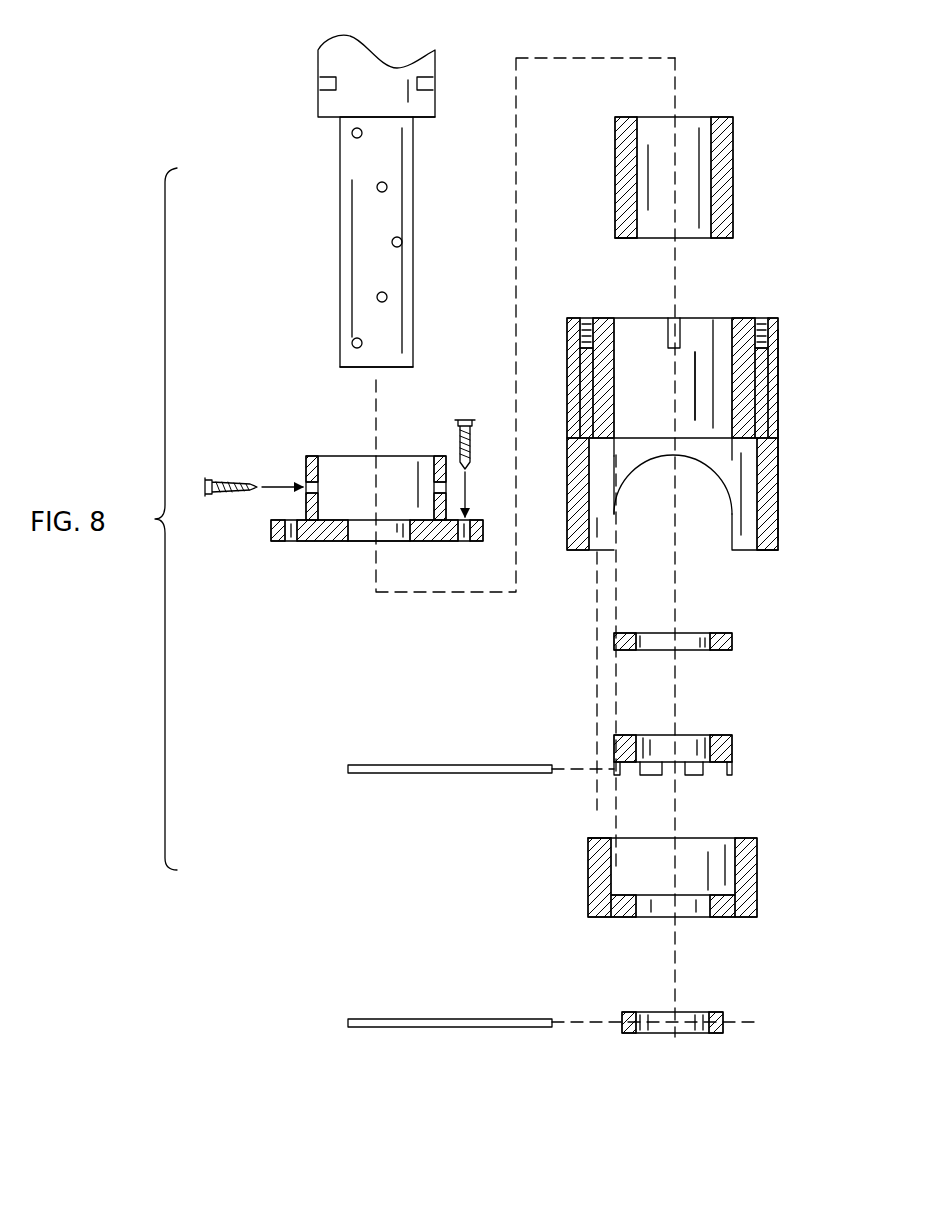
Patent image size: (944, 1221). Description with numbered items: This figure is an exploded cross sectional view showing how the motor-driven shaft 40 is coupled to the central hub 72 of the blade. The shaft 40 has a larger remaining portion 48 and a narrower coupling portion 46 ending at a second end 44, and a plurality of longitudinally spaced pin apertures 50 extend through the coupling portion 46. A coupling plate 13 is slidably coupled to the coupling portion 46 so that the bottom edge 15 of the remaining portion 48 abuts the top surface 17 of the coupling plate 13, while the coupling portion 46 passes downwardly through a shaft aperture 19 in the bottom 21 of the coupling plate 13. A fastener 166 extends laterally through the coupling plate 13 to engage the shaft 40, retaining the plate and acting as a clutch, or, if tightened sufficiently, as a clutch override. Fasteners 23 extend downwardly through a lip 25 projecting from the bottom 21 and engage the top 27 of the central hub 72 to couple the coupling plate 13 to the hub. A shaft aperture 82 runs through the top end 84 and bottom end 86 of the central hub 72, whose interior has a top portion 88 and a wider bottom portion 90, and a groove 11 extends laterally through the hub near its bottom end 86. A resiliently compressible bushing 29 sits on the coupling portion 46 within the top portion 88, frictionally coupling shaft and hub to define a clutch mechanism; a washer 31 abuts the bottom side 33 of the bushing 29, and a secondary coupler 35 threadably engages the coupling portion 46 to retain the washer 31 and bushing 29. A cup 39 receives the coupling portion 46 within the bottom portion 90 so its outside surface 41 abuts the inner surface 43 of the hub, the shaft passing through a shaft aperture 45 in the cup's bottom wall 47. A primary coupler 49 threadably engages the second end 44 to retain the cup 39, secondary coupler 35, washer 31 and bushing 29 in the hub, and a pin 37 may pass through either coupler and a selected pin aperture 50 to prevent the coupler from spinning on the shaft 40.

The shaft 40 is at (350, 202).
The remaining portion 48 is at (433, 83).
The bottom edge 15 is at (418, 118).
The pin apertures 50 is at (377, 187).
The coupling portion 46 is at (340, 222).
The second end 44 is at (352, 367).
The fastener 23 is at (465, 418).
The fastener 166 is at (205, 484).
The coupling plate 13 is at (338, 559).
The top surface 17 is at (350, 514).
The bottom 21 is at (369, 548).
The shaft aperture 19 is at (404, 530).
The lip 25 is at (483, 541).
The bushing 29 is at (662, 178).
The bottom side 33 is at (618, 238).
The top end 84 is at (597, 310).
The shaft aperture 82 is at (614, 345).
The top portion 88 is at (702, 349).
The top 27 is at (680, 426).
The central hub 72 is at (783, 398).
The groove 11 is at (612, 470).
The bottom portion 90 is at (718, 463).
The inner surface 43 is at (742, 548).
The bottom end 86 is at (768, 556).
The washer 31 is at (733, 640).
The secondary coupler 35 is at (733, 745).
The pin 37 is at (382, 765).
The cup 39 is at (588, 838).
The outside surface 41 is at (673, 901).
The shaft aperture 45 is at (638, 905).
The bottom wall 47 is at (698, 888).
The primary coupler 49 is at (723, 1030).